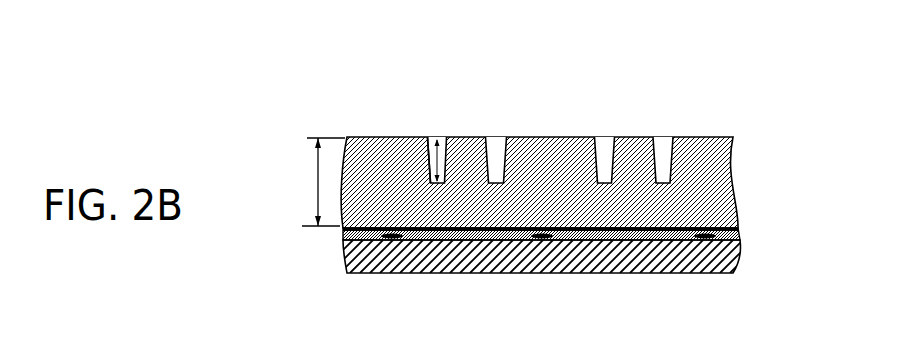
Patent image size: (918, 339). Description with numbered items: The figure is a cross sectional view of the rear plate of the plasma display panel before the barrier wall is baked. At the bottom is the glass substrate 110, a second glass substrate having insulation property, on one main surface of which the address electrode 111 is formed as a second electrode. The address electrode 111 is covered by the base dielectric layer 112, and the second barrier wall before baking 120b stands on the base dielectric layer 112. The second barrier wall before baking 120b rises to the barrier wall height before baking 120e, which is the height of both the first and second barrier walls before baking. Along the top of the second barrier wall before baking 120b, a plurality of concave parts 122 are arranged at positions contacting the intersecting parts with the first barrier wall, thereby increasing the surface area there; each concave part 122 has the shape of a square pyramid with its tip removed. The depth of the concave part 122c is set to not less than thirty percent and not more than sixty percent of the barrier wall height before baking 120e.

The glass substrate 110 is at (725, 267).
The address electrode 111 is at (695, 239).
The base dielectric layer 112 is at (340, 240).
The second barrier wall before baking 120b is at (710, 208).
The barrier wall height before baking 120e is at (317, 177).
The concave part 122 is at (663, 156).
The depth of the concave part 122c is at (427, 147).